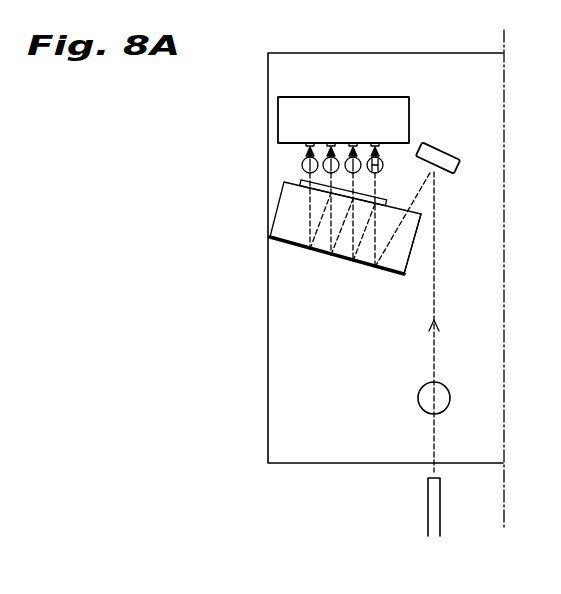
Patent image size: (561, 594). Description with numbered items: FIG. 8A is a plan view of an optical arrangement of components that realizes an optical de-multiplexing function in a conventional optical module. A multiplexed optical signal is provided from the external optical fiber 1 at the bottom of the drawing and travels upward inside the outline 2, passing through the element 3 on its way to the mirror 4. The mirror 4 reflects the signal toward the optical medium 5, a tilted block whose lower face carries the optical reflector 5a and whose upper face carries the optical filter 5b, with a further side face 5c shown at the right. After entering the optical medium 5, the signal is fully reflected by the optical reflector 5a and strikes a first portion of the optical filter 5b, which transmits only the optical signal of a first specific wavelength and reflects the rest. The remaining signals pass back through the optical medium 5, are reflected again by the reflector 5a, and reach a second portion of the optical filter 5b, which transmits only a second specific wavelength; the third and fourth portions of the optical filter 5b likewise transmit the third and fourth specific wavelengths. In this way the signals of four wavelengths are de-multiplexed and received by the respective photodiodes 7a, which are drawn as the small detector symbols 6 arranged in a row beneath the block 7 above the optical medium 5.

The external optical fiber 1 is at (428, 497).
The housing 2 is at (276, 378).
The lens 3 is at (426, 394).
The mirror 4 is at (440, 157).
The optical medium 5 is at (274, 213).
The optical reflector 5a is at (288, 240).
The optical filter 5b is at (300, 180).
The incident surface 5c is at (392, 262).
The photodetectors 6 is at (302, 165).
The signal processing unit 7 is at (346, 106).
The photodiodes 7a is at (310, 147).